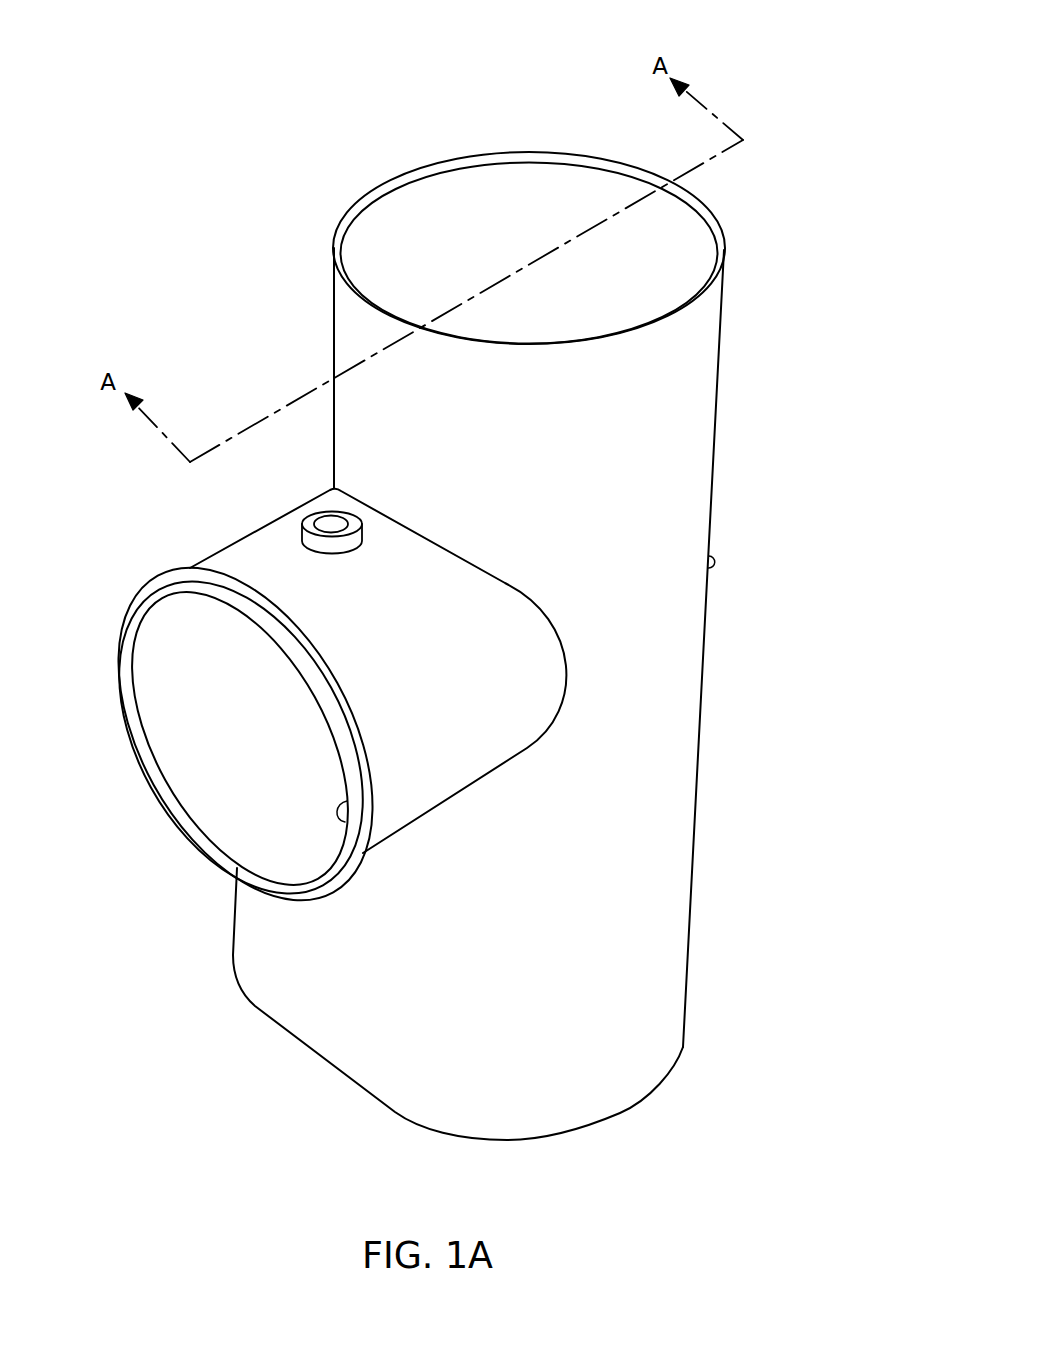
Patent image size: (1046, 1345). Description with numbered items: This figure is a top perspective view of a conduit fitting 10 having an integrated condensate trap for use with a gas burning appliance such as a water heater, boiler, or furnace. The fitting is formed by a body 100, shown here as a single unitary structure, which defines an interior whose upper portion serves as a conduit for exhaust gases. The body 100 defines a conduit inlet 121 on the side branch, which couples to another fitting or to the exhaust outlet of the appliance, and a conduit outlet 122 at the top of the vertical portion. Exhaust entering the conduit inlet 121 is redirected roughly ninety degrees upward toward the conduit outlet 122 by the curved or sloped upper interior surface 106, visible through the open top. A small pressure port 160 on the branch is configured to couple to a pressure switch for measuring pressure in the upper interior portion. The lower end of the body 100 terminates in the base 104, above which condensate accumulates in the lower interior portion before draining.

The conduit fitting 10 is at (759, 53).
The body 100 is at (717, 421).
The base 104 is at (625, 1113).
The upper interior surface 106 is at (457, 202).
The conduit inlet 121 is at (216, 768).
The conduit outlet 122 is at (547, 189).
The pressure port 160 is at (330, 525).